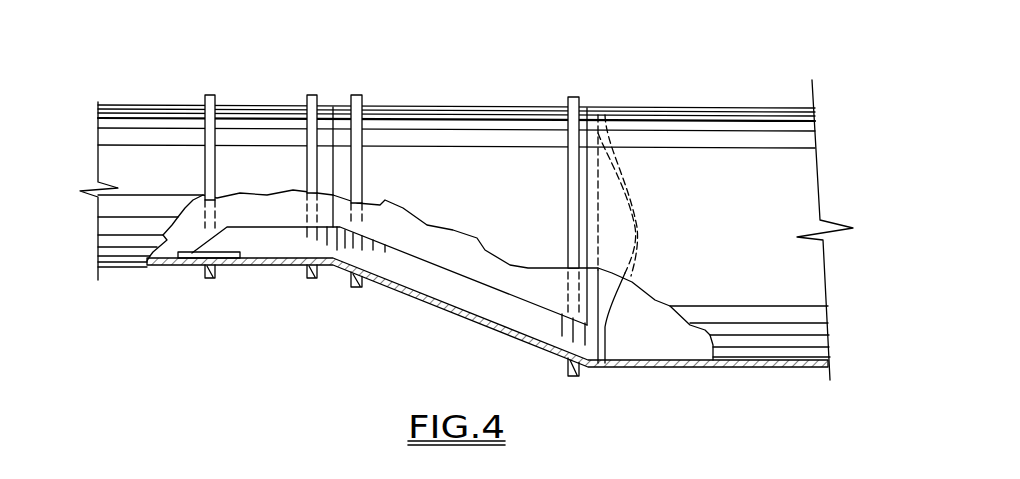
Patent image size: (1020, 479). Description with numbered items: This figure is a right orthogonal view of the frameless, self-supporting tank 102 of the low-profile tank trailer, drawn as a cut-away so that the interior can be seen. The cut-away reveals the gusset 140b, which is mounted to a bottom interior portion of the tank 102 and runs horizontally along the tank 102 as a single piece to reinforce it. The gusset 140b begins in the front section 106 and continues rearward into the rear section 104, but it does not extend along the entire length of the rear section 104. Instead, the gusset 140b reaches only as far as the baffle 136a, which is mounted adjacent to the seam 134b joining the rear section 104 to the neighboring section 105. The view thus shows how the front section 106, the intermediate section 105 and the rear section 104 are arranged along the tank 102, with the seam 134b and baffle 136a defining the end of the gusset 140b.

The tank 102 is at (480, 95).
The rear section 104 is at (735, 183).
The section 105 is at (485, 186).
The front section 106 is at (285, 183).
The seam 134b is at (587, 110).
The baffle 136a is at (635, 237).
The gusset 140b is at (438, 283).